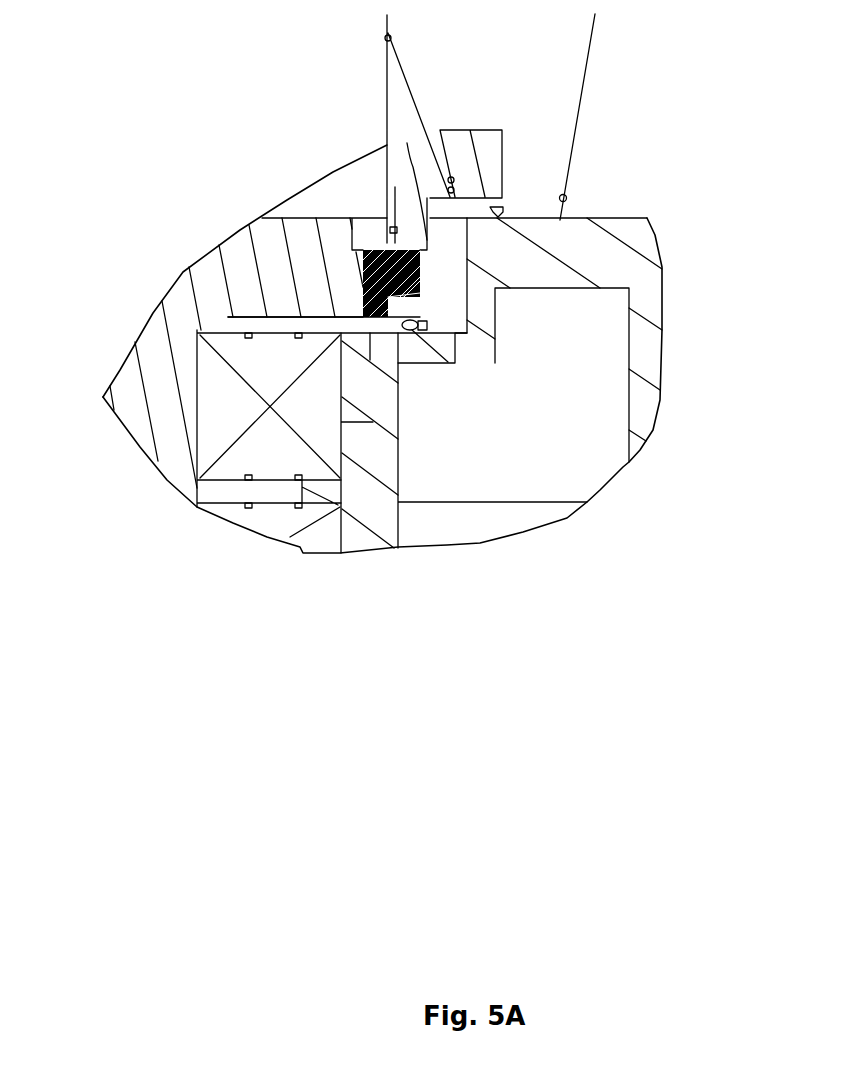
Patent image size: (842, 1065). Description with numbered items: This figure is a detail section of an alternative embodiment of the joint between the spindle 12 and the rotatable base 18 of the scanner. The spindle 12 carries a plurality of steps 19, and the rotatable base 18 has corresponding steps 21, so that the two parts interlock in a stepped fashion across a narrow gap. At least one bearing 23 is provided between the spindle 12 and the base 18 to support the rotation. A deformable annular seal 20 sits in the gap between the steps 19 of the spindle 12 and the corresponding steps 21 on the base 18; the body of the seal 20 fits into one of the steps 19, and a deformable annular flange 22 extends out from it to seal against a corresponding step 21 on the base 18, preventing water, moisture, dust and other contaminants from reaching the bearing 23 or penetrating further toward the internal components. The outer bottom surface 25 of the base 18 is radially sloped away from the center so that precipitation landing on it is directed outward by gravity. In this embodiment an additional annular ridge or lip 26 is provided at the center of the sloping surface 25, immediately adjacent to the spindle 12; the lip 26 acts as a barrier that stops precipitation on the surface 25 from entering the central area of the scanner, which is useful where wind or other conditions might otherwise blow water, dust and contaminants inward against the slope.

The spindle 12 is at (203, 288).
The rotatable base 18 is at (655, 283).
The steps 19 is at (387, 14).
The deformable annular seal 20 is at (375, 262).
The steps 21 is at (448, 362).
The deformable annular flange 22 is at (402, 318).
The bearing 23 is at (215, 429).
The outer bottom surface 25 is at (595, 14).
The annular ridge or lip 26 is at (507, 207).